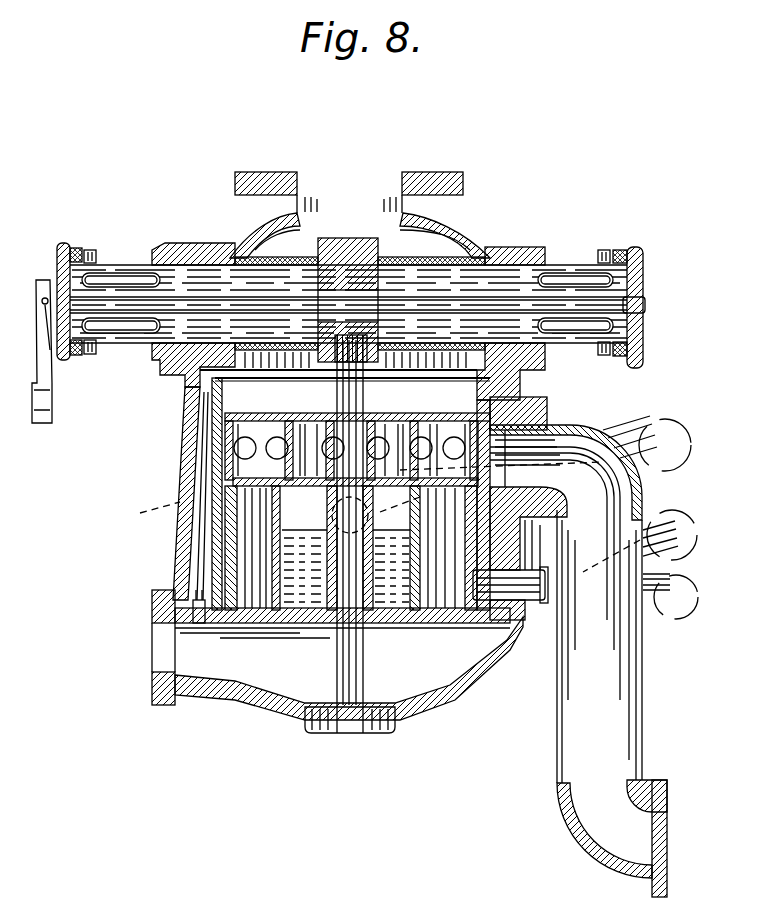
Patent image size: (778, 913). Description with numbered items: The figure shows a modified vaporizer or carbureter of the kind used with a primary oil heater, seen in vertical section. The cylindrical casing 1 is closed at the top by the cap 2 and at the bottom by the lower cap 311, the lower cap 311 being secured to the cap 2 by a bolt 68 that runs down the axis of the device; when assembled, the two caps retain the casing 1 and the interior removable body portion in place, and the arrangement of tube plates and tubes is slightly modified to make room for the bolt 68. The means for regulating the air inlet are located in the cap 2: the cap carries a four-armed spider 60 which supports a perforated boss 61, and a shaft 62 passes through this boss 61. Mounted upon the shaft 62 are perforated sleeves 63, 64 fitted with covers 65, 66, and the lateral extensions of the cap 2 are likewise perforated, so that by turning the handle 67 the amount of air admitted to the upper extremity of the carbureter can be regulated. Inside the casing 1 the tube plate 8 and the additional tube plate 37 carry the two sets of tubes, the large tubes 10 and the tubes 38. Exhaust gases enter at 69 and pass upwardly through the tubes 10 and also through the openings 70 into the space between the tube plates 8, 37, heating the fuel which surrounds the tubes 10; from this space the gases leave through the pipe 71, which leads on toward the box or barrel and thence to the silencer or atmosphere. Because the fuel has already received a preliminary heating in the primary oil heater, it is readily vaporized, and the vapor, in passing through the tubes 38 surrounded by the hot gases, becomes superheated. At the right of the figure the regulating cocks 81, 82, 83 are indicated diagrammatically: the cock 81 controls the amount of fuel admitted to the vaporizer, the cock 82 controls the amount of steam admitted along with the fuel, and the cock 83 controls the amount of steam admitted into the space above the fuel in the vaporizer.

The casing 1 is at (180, 486).
The cap 2 is at (500, 247).
The tube plate 8 is at (273, 485).
The tubes 10 is at (273, 535).
The additional tube plate 37 is at (423, 447).
The tubes 38 is at (493, 425).
The four-armed spider 60 is at (445, 219).
The perforated boss 61 is at (355, 250).
The shaft 62 is at (640, 305).
The perforated sleeve 63 is at (540, 247).
The perforated sleeve 64 is at (182, 255).
The cover 65 is at (645, 256).
The cover 66 is at (62, 265).
The handle 67 is at (42, 423).
The bolt 68 is at (348, 697).
The exhaust gas inlet 69 is at (178, 643).
The openings 70 is at (197, 622).
The pipe 71 is at (580, 693).
The regulating cock 81 is at (677, 617).
The regulating cock 82 is at (672, 512).
The regulating cock 83 is at (672, 416).
The lower cap 311 is at (458, 682).